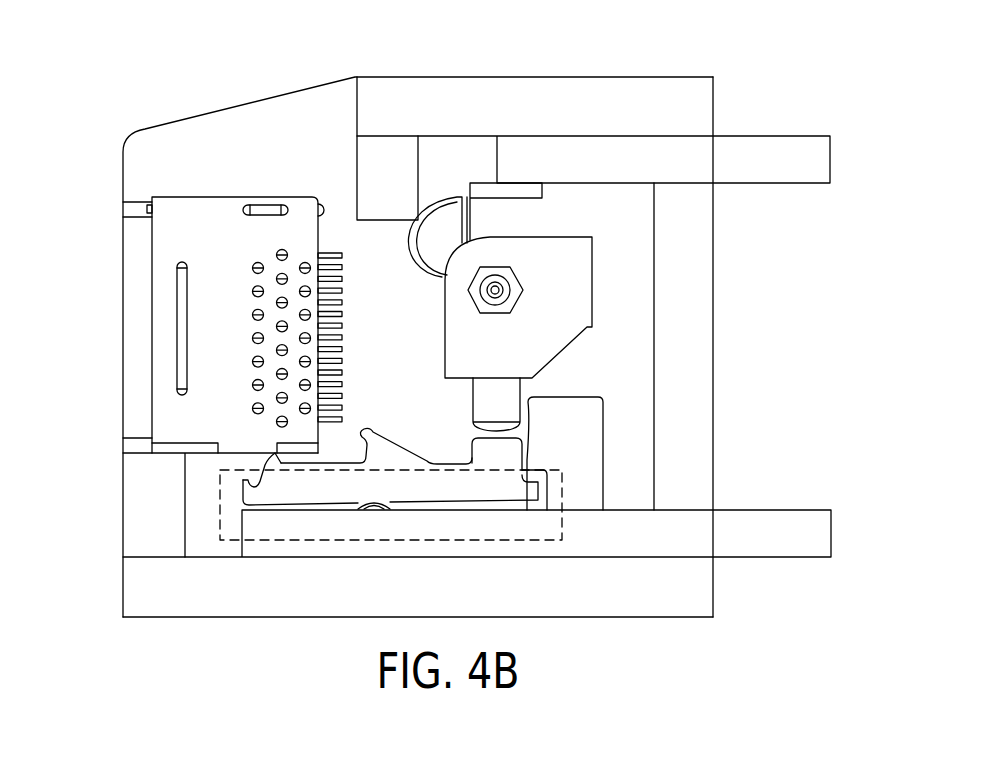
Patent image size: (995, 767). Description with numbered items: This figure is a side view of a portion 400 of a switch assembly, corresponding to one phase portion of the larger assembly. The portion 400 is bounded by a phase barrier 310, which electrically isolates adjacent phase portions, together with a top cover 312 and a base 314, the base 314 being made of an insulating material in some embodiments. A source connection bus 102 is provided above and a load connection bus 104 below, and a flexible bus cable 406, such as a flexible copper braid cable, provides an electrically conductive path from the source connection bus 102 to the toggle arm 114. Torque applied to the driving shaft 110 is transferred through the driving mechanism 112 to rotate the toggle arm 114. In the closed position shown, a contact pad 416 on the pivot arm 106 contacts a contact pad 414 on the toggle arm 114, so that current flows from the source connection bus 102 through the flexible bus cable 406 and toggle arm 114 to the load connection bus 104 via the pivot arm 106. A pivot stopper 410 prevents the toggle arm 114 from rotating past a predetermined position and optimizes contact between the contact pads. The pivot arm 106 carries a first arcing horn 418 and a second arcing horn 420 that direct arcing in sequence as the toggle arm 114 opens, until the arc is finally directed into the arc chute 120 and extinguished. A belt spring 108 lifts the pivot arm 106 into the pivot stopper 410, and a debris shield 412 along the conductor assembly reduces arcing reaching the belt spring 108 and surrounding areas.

The portion 400 is at (122, 62).
The phase barrier 310 is at (227, 122).
The top cover 312 is at (697, 93).
The base 314 is at (702, 605).
The source connection bus 102 is at (813, 153).
The load connection bus 104 is at (813, 533).
The arc chute 120 is at (163, 237).
The flexible bus cable 406 is at (438, 196).
The driving shaft 110 is at (497, 265).
The driving mechanism 112 is at (572, 250).
The toggle arm 114 is at (510, 387).
The contact pad 414 is at (515, 423).
The contact pad 416 is at (522, 440).
The pivot stopper 410 is at (588, 493).
The first arcing horn 418 is at (365, 428).
The second arcing horn 420 is at (275, 453).
The pivot arm 106 is at (272, 495).
The belt spring 108 is at (374, 506).
The debris shield 412 is at (555, 528).